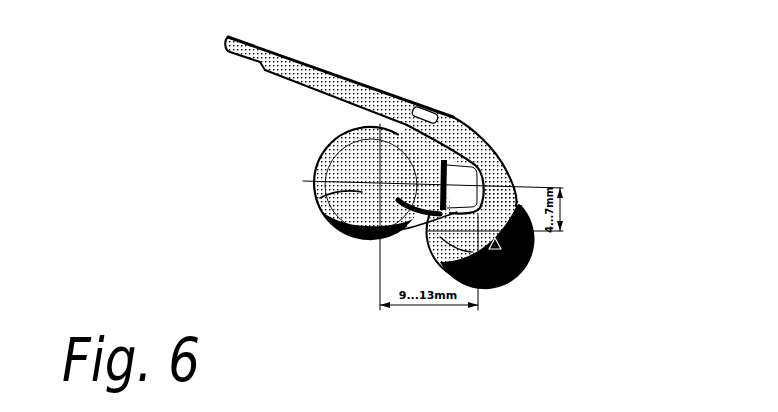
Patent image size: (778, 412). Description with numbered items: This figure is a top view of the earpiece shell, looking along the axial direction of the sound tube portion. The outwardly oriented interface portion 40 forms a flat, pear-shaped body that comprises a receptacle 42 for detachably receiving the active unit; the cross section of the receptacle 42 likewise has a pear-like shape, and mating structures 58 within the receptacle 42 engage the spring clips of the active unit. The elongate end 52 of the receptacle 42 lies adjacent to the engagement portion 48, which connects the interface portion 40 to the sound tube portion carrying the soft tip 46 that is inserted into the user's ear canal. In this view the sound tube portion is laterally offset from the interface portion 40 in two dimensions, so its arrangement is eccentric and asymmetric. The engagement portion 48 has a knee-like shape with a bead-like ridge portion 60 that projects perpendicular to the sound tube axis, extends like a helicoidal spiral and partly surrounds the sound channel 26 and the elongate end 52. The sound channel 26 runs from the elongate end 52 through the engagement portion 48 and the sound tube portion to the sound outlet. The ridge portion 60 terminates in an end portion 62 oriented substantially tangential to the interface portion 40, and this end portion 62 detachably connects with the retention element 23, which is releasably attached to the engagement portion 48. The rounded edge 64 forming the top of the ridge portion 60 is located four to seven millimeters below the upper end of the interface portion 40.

The retention element 23 is at (307, 78).
The sound channel 26 is at (446, 186).
The interface portion 40 is at (320, 220).
The receptacle 42 is at (318, 198).
The soft tip 46 is at (530, 263).
The engagement portion 48 is at (502, 278).
The elongate end of the receptacle 52 is at (402, 224).
The mating structures 58 is at (372, 231).
The ridge portion 60 is at (500, 178).
The end portion of the ridge portion 62 is at (450, 137).
The rounded edge of the ridge portion 64 is at (520, 195).